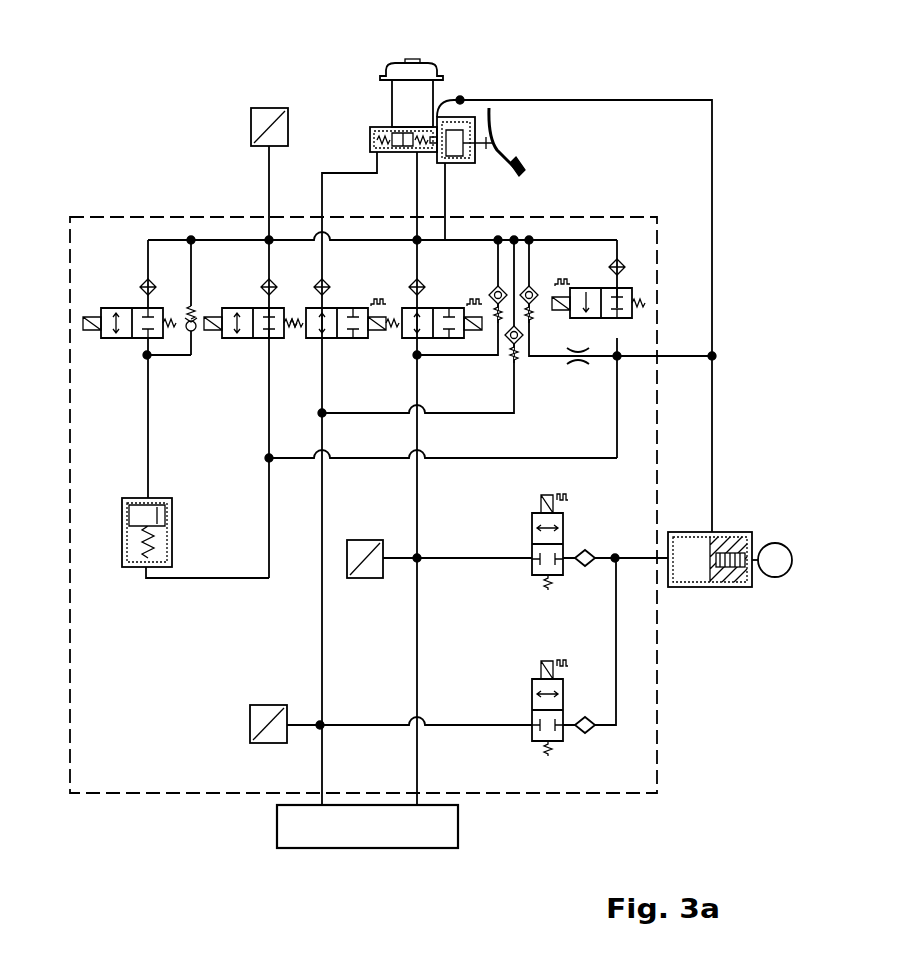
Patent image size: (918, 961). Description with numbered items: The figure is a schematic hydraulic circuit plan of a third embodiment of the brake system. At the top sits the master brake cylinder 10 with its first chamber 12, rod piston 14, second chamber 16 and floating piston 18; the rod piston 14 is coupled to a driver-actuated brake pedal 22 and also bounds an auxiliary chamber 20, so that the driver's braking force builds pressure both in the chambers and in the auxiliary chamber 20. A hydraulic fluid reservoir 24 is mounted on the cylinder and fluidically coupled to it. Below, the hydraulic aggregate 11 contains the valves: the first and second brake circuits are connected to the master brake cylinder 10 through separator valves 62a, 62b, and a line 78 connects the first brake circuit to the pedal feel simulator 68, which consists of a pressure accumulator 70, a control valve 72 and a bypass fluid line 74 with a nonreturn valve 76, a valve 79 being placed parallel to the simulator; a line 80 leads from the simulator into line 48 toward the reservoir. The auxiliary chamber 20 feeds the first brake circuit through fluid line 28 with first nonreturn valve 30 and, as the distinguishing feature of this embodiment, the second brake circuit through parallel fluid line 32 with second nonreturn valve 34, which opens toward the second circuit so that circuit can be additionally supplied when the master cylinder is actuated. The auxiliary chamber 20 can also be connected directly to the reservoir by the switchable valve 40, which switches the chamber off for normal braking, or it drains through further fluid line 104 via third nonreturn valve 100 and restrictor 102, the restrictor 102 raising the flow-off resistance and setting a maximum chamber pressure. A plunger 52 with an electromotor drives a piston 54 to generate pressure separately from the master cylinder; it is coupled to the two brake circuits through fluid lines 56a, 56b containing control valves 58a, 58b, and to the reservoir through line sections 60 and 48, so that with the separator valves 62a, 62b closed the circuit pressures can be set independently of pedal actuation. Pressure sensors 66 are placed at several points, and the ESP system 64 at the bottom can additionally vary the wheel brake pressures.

The master brake cylinder 10 is at (372, 107).
The hydraulic aggregate 11 is at (578, 798).
The first chamber 12 is at (432, 124).
The rod piston 14 is at (456, 163).
The second chamber 16 is at (370, 141).
The floating piston 18 is at (406, 152).
The auxiliary chamber 20 is at (460, 100).
The brake pedal 22 is at (497, 143).
The hydraulic fluid reservoir 24 is at (405, 60).
The fluid line 28 is at (453, 358).
The first nonreturn valve 30 is at (497, 287).
The parallel fluid line 32 is at (364, 413).
The second nonreturn valve 34 is at (512, 352).
The valve 40 is at (622, 290).
The line section 48 is at (688, 360).
The plunger 52 is at (698, 605).
The piston 54 is at (732, 532).
The fluid line 56a is at (445, 558).
The fluid line 56b is at (465, 728).
The control valve 58a is at (564, 532).
The control valve 58b is at (532, 701).
The line section 60 is at (712, 448).
The separator valve 62a is at (439, 308).
The separator valve 62b is at (345, 308).
The ESP system 64 is at (277, 827).
The pressure sensor 66 is at (269, 108).
The pedal feel simulator 68 is at (108, 569).
The pressure accumulator 70 is at (122, 527).
The control valve 72 is at (103, 308).
The bypass fluid line 74 is at (172, 357).
The nonreturn valve 76 is at (198, 318).
The line 78 is at (348, 238).
The valve 79 is at (244, 308).
The line 80 is at (368, 460).
The third nonreturn valve 100 is at (535, 268).
The restrictor 102 is at (580, 366).
The further fluid line 104 is at (543, 358).